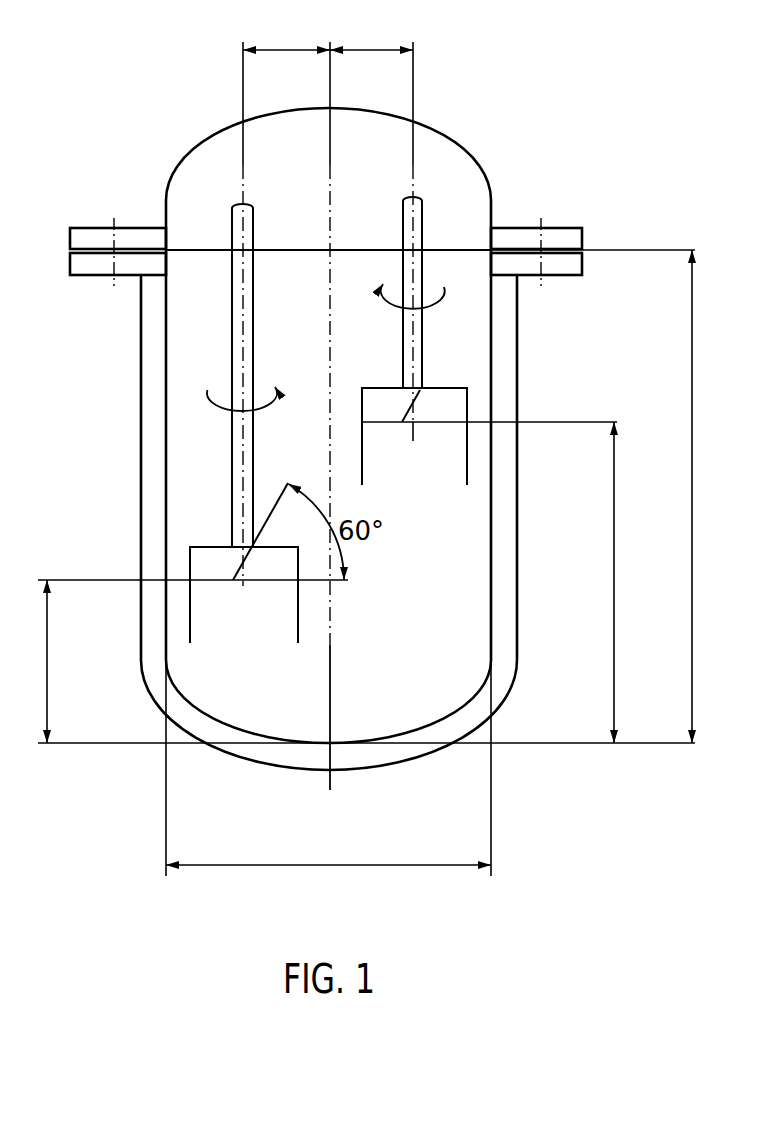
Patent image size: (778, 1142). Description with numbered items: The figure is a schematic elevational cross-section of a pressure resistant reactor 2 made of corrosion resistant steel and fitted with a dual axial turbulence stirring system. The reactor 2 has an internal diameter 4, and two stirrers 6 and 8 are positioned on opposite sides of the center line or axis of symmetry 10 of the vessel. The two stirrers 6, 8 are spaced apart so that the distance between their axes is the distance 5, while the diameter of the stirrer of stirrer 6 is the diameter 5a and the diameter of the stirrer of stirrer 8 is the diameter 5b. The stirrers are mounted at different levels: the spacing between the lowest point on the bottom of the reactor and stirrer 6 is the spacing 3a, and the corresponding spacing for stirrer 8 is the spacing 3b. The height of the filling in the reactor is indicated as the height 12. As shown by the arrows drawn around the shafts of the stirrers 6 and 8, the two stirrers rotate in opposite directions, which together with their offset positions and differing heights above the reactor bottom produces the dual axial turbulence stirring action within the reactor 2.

The reactor 2 is at (153, 455).
The internal diameter 4 is at (328, 768).
The distance between the axes of the stirrers 5 is at (370, 45).
The diameter of the stirrer of stirrer 6 5a is at (298, 638).
The diameter of the stirrer of stirrer 8 5b is at (362, 478).
The stirrer 6 is at (242, 322).
The stirrer 8 is at (417, 353).
The center line or axis of symmetry 10 is at (333, 690).
The height of the filling 12 is at (593, 496).
The spacing between the bottom of the reactor and stirrer 6 3a is at (366, 661).
The spacing between the bottom of the reactor and stirrer 8 3b is at (489, 582).